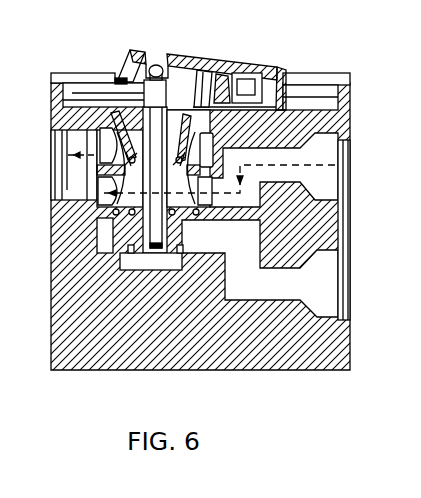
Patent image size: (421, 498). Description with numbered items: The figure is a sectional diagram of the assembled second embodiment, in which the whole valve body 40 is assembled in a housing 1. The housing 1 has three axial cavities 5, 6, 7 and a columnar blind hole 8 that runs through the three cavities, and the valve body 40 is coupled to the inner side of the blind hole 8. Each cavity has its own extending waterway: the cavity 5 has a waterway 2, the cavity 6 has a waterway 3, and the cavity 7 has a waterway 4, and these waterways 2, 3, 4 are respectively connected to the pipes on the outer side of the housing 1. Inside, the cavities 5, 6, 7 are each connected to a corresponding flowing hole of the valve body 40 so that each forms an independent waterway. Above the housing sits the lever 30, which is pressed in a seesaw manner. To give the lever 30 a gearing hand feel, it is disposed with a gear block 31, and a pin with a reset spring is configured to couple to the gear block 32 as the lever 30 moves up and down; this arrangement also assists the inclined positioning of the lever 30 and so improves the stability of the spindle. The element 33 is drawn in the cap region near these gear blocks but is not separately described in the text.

The housing 1 is at (137, 267).
The waterway 2 is at (72, 185).
The waterway 3 is at (330, 153).
The waterway 4 is at (330, 277).
The cavity 5 is at (103, 147).
The cavity 6 is at (107, 193).
The cavity 7 is at (97, 257).
The columnar blind hole 8 is at (107, 238).
The lever 30 is at (167, 52).
The gear block 31 is at (206, 74).
The gear block 32 is at (215, 70).
The insert 33 is at (240, 72).
The valve body 40 is at (133, 160).